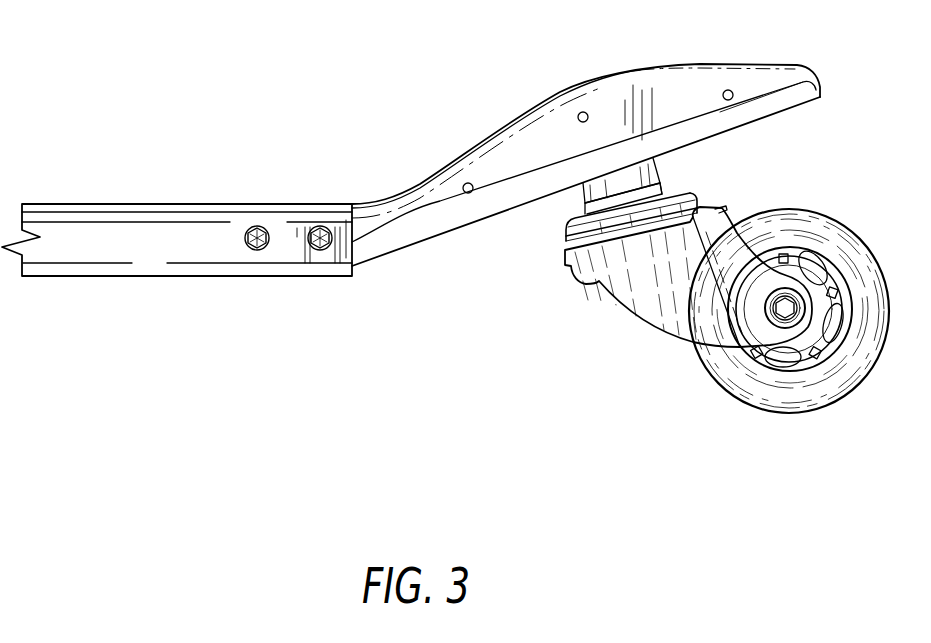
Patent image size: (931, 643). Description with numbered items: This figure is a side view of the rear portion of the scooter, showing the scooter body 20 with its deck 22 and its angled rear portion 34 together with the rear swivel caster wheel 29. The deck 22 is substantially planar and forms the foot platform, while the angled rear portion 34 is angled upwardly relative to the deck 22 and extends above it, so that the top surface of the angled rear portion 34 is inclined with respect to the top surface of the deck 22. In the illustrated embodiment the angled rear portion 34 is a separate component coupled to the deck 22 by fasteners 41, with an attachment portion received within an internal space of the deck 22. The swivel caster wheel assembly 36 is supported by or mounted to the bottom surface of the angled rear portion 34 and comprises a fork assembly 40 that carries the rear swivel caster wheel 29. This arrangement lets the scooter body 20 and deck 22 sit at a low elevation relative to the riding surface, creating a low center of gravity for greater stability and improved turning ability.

The scooter body 20 is at (160, 262).
The deck 22 is at (277, 203).
The rear swivel caster wheel 29 is at (807, 400).
The angled rear portion 34 is at (820, 87).
The swivel caster wheel assembly 36 is at (542, 285).
The fork assembly 40 is at (650, 307).
The fasteners 41 is at (257, 249).